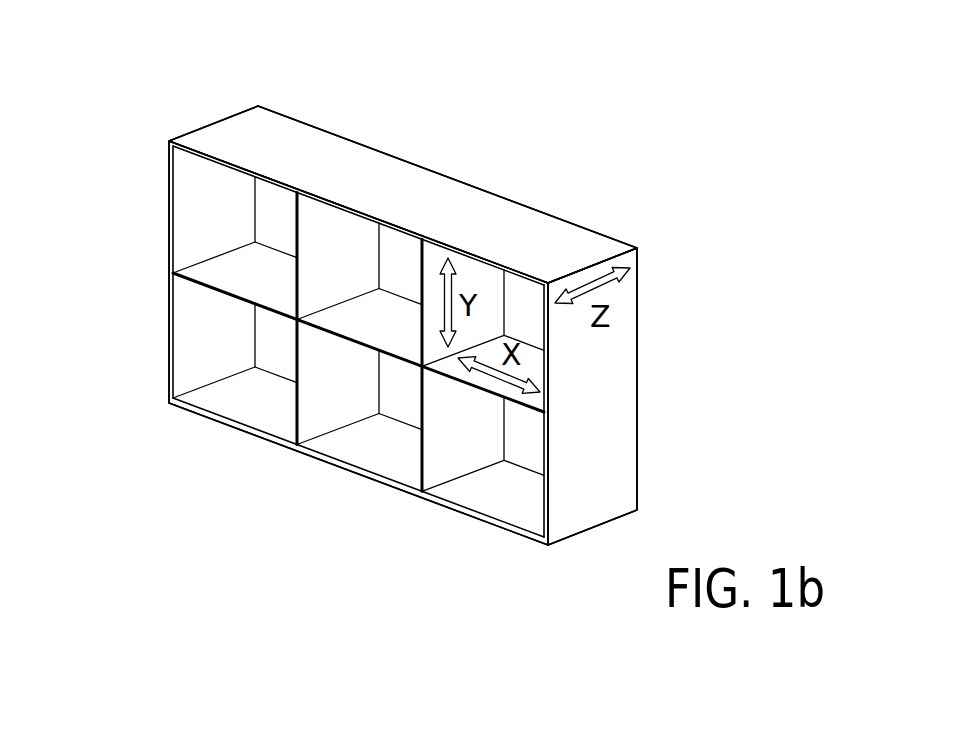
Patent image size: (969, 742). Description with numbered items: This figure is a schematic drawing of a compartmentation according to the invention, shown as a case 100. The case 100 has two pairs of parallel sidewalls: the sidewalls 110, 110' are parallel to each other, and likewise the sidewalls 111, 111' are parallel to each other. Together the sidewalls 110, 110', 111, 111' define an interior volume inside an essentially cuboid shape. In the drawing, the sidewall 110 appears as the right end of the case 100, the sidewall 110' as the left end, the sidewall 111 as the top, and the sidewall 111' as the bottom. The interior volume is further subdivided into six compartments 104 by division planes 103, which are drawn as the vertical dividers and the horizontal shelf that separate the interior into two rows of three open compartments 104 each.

The case 100 is at (437, 130).
The division planes 103 is at (322, 238).
The compartments 104 is at (238, 398).
The sidewall 110 is at (590, 396).
The sidewall 110' is at (98, 272).
The sidewall 111 is at (403, 195).
The sidewall 111' is at (358, 477).